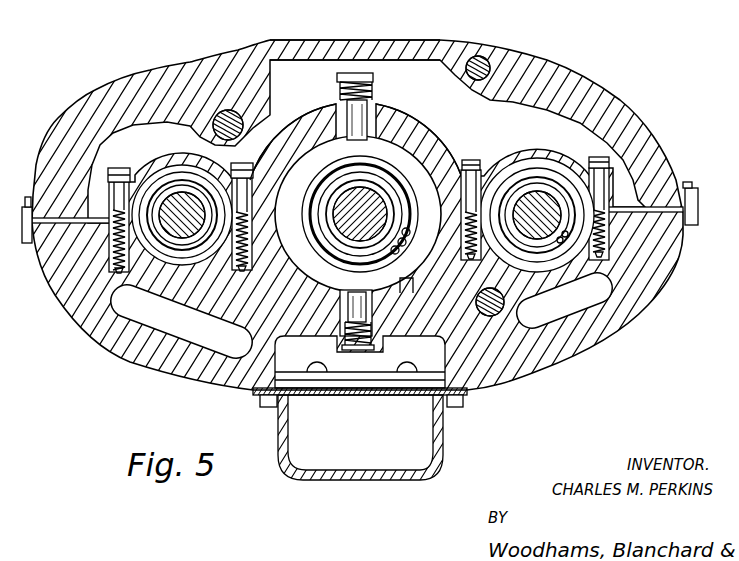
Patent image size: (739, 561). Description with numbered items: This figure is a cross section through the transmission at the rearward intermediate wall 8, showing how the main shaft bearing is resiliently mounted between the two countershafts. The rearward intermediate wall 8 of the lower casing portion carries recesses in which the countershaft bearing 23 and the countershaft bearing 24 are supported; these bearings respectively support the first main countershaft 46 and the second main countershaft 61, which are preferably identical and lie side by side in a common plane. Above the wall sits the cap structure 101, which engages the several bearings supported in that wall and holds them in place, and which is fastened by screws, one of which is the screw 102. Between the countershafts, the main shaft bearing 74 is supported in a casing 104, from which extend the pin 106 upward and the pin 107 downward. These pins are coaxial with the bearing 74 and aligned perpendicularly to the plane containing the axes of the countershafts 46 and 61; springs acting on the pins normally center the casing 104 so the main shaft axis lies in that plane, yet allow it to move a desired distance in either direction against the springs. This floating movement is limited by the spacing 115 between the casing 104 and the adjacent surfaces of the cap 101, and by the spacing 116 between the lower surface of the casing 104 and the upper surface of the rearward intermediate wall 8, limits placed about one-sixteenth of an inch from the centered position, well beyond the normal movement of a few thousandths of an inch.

The rearward intermediate wall 8 is at (468, 302).
The countershaft bearing 23 is at (530, 247).
The countershaft bearing 24 is at (194, 262).
The first main countershaft 46 is at (534, 195).
The second main countershaft 61 is at (174, 188).
The main shaft bearing 74 is at (315, 254).
The cap structure 101 is at (387, 113).
The screw 102 is at (464, 160).
The casing 104 is at (308, 170).
The pin 106 is at (350, 120).
The pin 107 is at (367, 308).
The spacing 115 is at (413, 135).
The spacing 116 is at (414, 292).